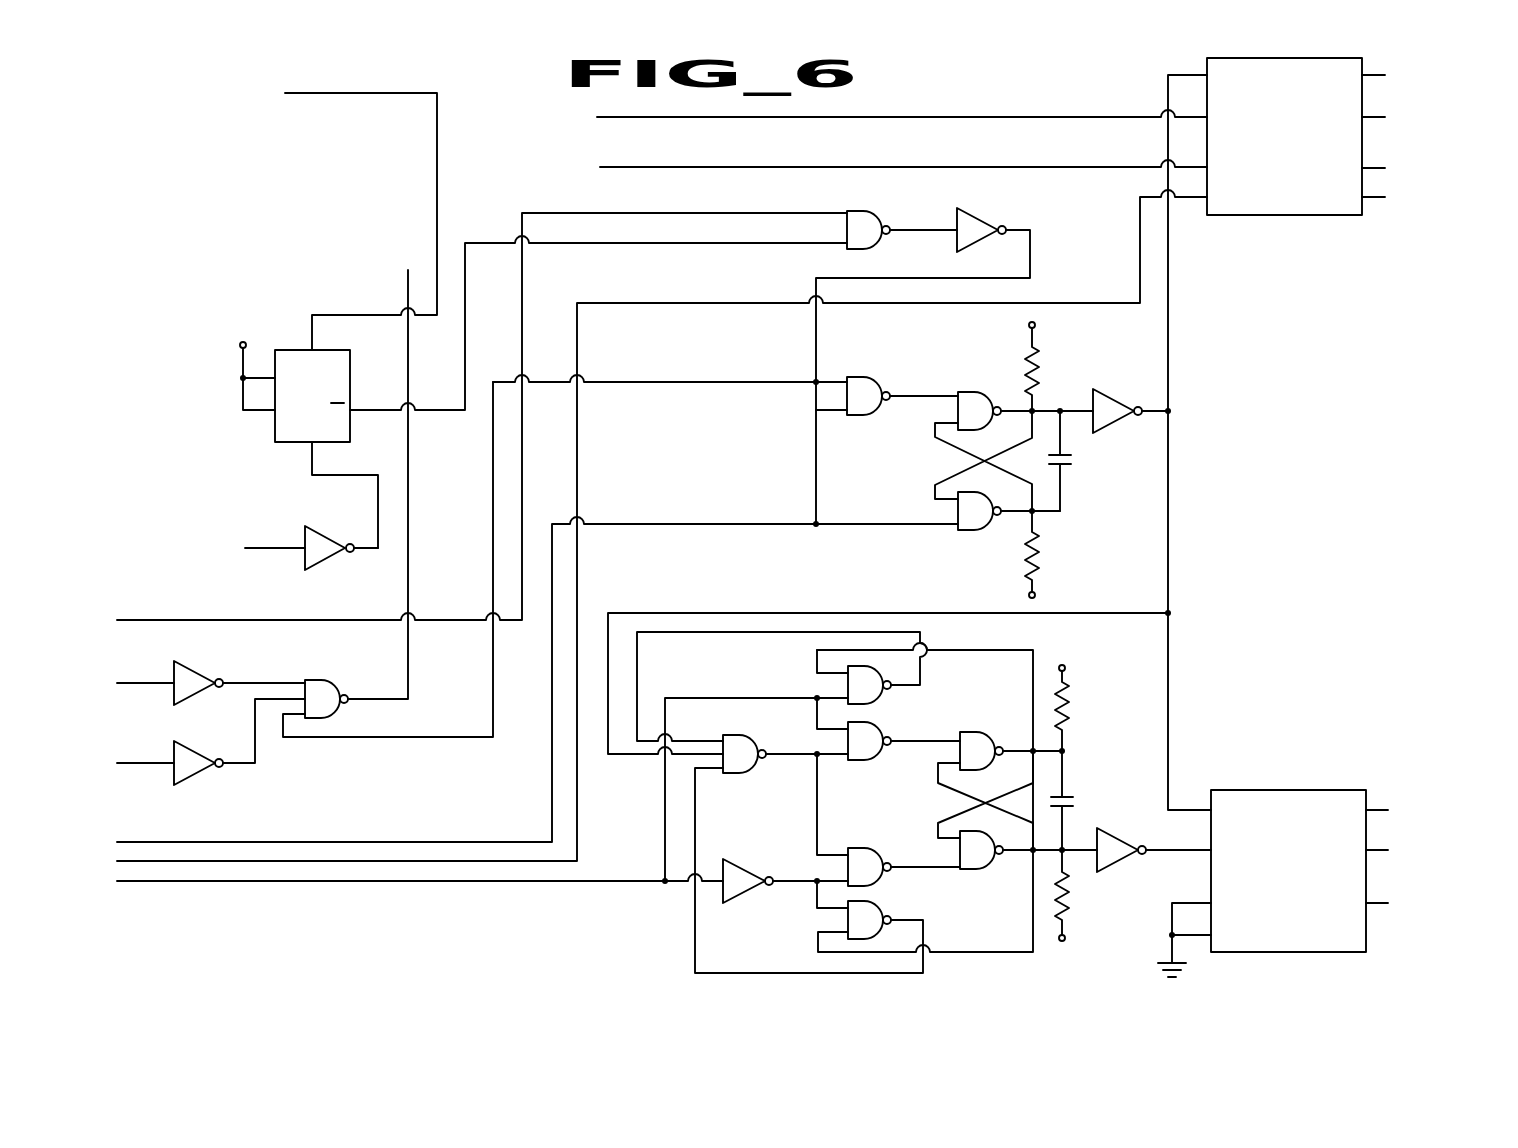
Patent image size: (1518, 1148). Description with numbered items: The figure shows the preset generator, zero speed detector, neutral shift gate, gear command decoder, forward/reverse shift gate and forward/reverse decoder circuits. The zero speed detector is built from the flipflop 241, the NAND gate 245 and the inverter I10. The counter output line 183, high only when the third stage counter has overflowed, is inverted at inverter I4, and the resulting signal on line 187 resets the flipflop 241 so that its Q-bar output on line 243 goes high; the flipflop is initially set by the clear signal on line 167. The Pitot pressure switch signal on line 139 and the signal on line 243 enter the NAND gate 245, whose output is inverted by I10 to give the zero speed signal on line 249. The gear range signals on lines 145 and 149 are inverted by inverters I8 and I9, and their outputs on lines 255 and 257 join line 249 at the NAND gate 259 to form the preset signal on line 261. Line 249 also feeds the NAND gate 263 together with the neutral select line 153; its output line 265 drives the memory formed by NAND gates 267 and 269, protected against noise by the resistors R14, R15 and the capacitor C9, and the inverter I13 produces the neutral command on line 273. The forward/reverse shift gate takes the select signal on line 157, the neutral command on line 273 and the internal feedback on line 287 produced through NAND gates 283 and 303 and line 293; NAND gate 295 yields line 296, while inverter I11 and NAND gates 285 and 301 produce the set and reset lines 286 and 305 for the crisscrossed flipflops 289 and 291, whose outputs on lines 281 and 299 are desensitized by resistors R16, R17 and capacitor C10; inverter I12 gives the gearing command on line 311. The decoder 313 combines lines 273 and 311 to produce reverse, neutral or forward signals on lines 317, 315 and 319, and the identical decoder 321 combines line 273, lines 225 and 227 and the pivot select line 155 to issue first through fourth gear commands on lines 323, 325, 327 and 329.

The line 167 is at (439, 145).
The flipflop 241 is at (280, 428).
The line 243 is at (370, 412).
The line 187 is at (378, 500).
The inverter I4 is at (325, 560).
The output line 183 is at (258, 533).
The line 139 is at (222, 618).
The line 225 is at (818, 117).
The line 227 is at (818, 167).
The NAND gate 245 is at (855, 215).
The inverter I10 is at (965, 218).
The line 249 is at (1032, 250).
The output line 273 is at (1168, 76).
The BCD-decimal decoder 321 is at (1275, 215).
The pivot select line 155 is at (1178, 200).
The output line 323 is at (1382, 75).
The output line 325 is at (1372, 125).
The output line 327 is at (1385, 168).
The output line 329 is at (1378, 200).
The NAND gate 263 is at (865, 365).
The line 265 is at (918, 383).
The NAND gate 267 is at (975, 392).
The NAND gate 269 is at (968, 532).
The line 153 is at (815, 447).
The resistor R14 is at (1040, 352).
The resistor R15 is at (1040, 556).
The capacitor C9 is at (1070, 464).
The inverter I13 is at (1135, 442).
The inverter I8 is at (222, 660).
The line 145 is at (127, 680).
The line 255 is at (240, 683).
The NAND gate 259 is at (318, 683).
The line 261 is at (412, 683).
The inverter I9 is at (195, 775).
The line 149 is at (127, 760).
The line 257 is at (257, 763).
The line 157 is at (265, 883).
The inverter I11 is at (752, 893).
The NAND gate 295 is at (733, 742).
The line 296 is at (783, 758).
The line 287 is at (925, 678).
The NAND gate 283 is at (848, 685).
The line 281 is at (945, 650).
The NAND gate 285 is at (920, 758).
The line 286 is at (903, 736).
The NAND gate 289 is at (960, 752).
The NAND gate 291 is at (985, 868).
The NAND gate 301 is at (880, 836).
The line 305 is at (893, 868).
The NAND gate 303 is at (880, 905).
The line 293 is at (697, 813).
The line 299 is at (965, 955).
The resistor R16 is at (1067, 692).
The capacitor C10 is at (1068, 800).
The resistor R17 is at (1068, 893).
The inverter I12 is at (1112, 837).
The line 311 is at (1185, 852).
The BCD-decimal decoder 313 is at (1280, 790).
The line 317 is at (1385, 810).
The output line 315 is at (1375, 852).
The output line 319 is at (1375, 905).